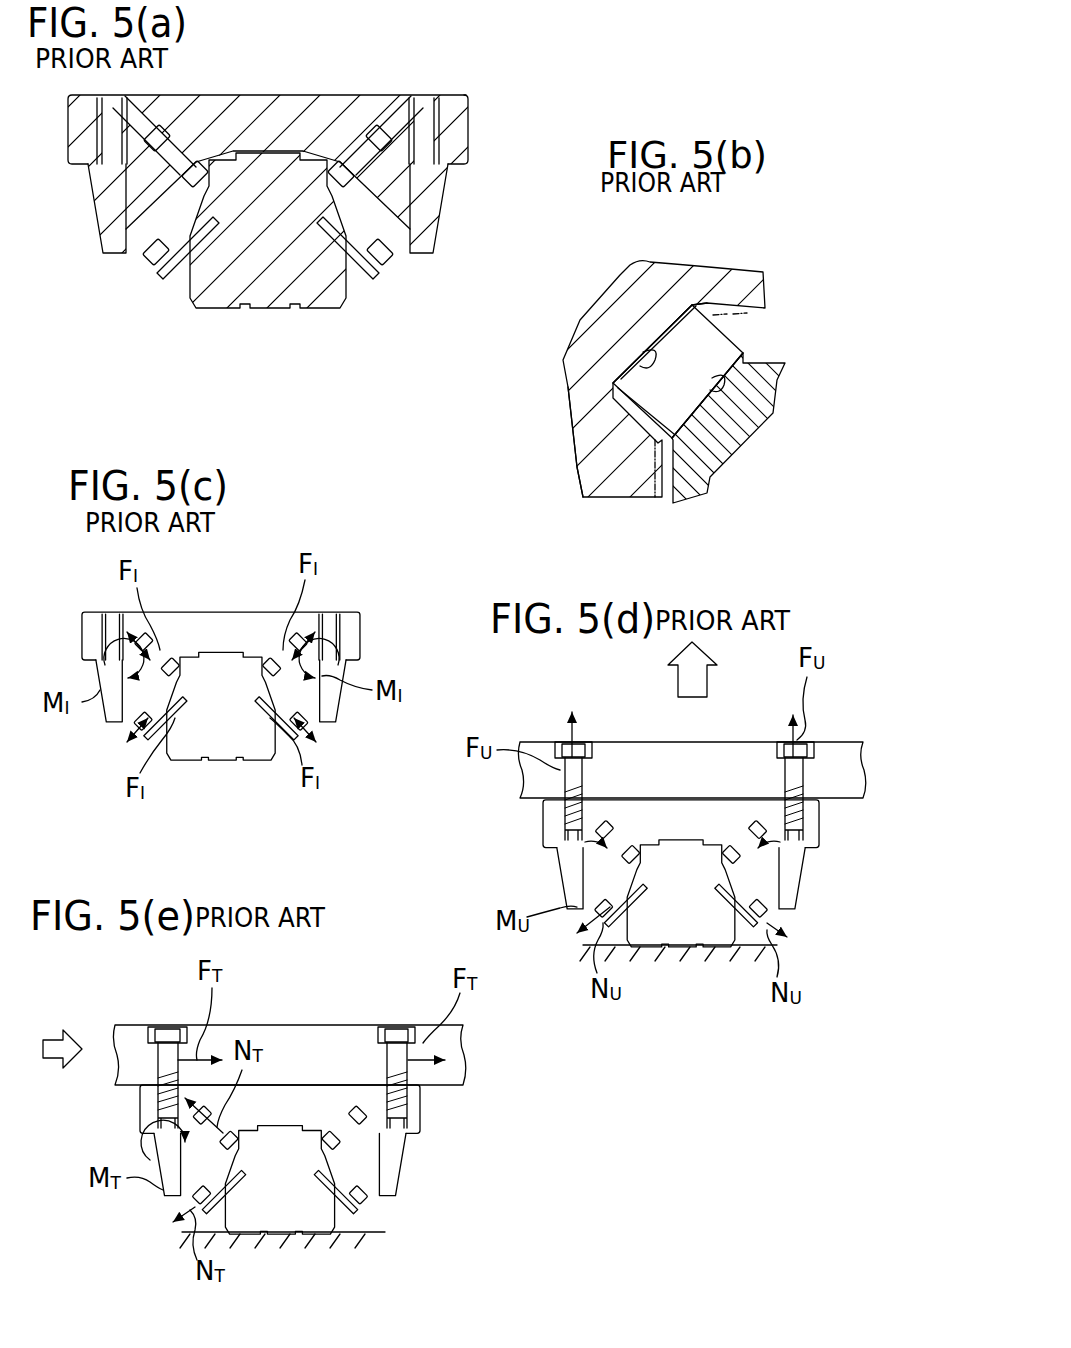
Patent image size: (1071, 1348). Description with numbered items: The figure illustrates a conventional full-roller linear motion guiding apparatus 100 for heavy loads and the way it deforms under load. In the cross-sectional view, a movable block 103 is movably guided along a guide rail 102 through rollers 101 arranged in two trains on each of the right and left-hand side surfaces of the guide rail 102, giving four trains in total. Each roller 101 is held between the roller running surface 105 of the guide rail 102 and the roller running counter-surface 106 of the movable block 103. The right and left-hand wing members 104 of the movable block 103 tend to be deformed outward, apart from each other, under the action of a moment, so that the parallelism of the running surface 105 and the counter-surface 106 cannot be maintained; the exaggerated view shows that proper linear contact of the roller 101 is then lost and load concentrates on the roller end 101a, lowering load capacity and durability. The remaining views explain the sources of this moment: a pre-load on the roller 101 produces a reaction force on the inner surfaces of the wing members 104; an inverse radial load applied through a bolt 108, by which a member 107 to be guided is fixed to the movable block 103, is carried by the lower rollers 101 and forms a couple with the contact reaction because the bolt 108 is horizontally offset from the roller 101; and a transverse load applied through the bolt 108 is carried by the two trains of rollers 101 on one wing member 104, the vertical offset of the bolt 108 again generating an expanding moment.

In FIG. 5a, the linear guide apparatus 100 is at (484, 82).
In FIG. 5a, the roller 101 is at (193, 100).
In FIG. 5b, the roller 101 is at (707, 413).
In FIG. 5c, the roller 101 is at (178, 670).
In FIG. 5d, the roller 101 is at (640, 887).
In FIG. 5e, the roller 101 is at (230, 1140).
In FIG. 5b, the roller end 101a is at (676, 300).
In FIG. 5a, the guide rail 102 is at (273, 300).
In FIG. 5b, the guide rail 102 is at (773, 363).
In FIG. 5c, the guide rail 102 is at (221, 706).
In FIG. 5d, the guide rail 102 is at (681, 893).
In FIG. 5e, the guide rail 102 is at (279, 1180).
In FIG. 5a, the movable block 103 is at (286, 106).
In FIG. 5b, the movable block 103 is at (627, 280).
In FIG. 5c, the movable block 103 is at (242, 623).
In FIG. 5d, the movable block 103 is at (648, 807).
In FIG. 5e, the movable block 103 is at (283, 1100).
In FIG. 5a, the wing member 104 is at (137, 195).
In FIG. 5b, the wing member 104 is at (600, 473).
In FIG. 5c, the wing member 104 is at (118, 715).
In FIG. 5d, the wing member 104 is at (593, 857).
In FIG. 5e, the wing member 104 is at (173, 1190).
In FIG. 5b, the roller running surface 105 is at (687, 393).
In FIG. 5b, the roller running counter-surface 106 is at (630, 353).
In FIG. 5d, the member to be guided 107 is at (747, 750).
In FIG. 5e, the member to be guided 107 is at (337, 1037).
In FIG. 5d, the bolt 108 is at (597, 750).
In FIG. 5e, the bolt 108 is at (163, 1067).